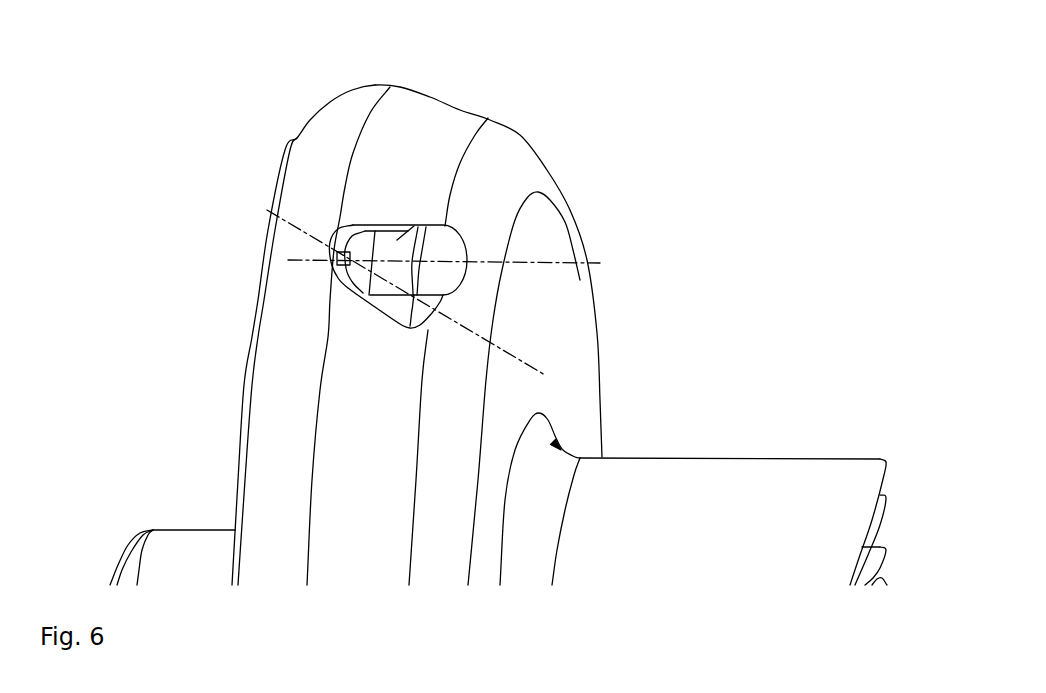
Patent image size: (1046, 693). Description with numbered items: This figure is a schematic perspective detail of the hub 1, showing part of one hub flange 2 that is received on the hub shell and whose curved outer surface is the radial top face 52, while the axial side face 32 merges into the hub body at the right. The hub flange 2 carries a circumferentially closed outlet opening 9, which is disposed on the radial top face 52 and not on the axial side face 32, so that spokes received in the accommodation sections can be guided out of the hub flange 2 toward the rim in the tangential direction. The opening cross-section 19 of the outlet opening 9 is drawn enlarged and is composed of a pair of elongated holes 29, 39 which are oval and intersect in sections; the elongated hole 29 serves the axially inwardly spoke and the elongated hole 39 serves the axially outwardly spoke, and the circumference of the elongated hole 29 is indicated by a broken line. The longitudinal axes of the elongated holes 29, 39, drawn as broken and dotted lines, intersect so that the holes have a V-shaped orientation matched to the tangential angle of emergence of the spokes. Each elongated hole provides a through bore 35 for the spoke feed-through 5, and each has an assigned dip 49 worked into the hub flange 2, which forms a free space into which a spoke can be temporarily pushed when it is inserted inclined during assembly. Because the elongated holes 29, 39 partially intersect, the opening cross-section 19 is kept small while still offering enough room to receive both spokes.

The hub 1 is at (150, 67).
The hub flange 2 is at (272, 468).
The spoke feed-through 5 is at (366, 250).
The outlet opening 9 is at (325, 250).
The opening cross-section 19 is at (345, 287).
The elongated hole 29 is at (435, 282).
The axial side face 32 is at (583, 412).
The through bore 35 is at (380, 250).
The elongated hole 39 is at (427, 315).
The dip 49 is at (447, 248).
The radial top face 52 is at (460, 113).